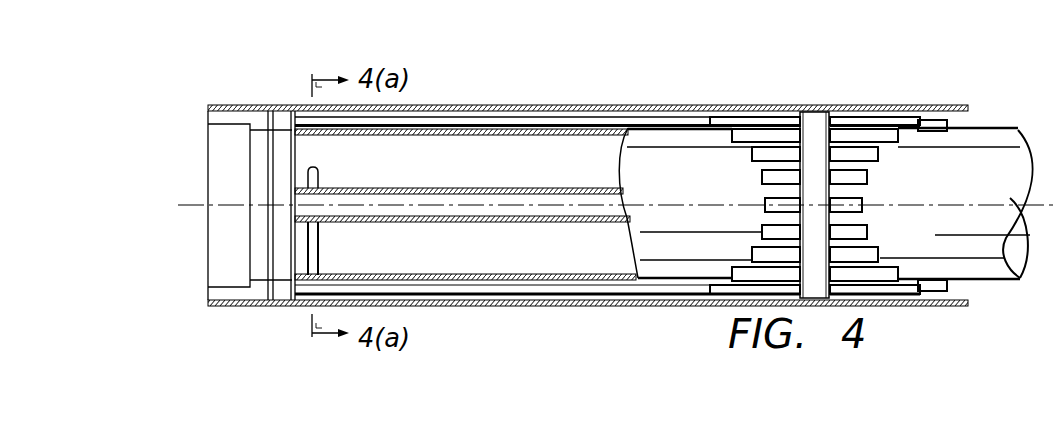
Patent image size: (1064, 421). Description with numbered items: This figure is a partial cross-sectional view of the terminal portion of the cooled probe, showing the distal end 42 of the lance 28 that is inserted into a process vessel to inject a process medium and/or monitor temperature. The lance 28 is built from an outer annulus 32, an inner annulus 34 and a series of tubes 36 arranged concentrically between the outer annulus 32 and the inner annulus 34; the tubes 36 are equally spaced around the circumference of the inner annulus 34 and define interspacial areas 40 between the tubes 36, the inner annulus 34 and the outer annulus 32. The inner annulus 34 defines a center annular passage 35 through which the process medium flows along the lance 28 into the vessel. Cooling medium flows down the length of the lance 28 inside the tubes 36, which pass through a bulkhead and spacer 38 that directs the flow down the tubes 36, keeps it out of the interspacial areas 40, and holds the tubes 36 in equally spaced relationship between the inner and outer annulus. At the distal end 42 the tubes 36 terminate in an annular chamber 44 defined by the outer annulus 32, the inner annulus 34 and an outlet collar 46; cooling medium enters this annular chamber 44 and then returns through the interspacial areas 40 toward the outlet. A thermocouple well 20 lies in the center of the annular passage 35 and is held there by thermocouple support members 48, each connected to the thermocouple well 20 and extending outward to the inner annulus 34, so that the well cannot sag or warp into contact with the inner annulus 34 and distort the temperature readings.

The thermocouple well 20 is at (511, 190).
The lance 28 is at (738, 82).
The outer annulus 32 is at (935, 104).
The inner annulus 34 is at (448, 136).
The center annular passage 35 is at (482, 263).
The tubes 36 is at (553, 118).
The bulkhead and spacer 38 is at (823, 112).
The interspacial areas 40 is at (767, 194).
The distal end 42 is at (265, 86).
The annular chamber 44 is at (283, 300).
The outlet collar 46 is at (224, 105).
The thermocouple support members 48 is at (319, 180).